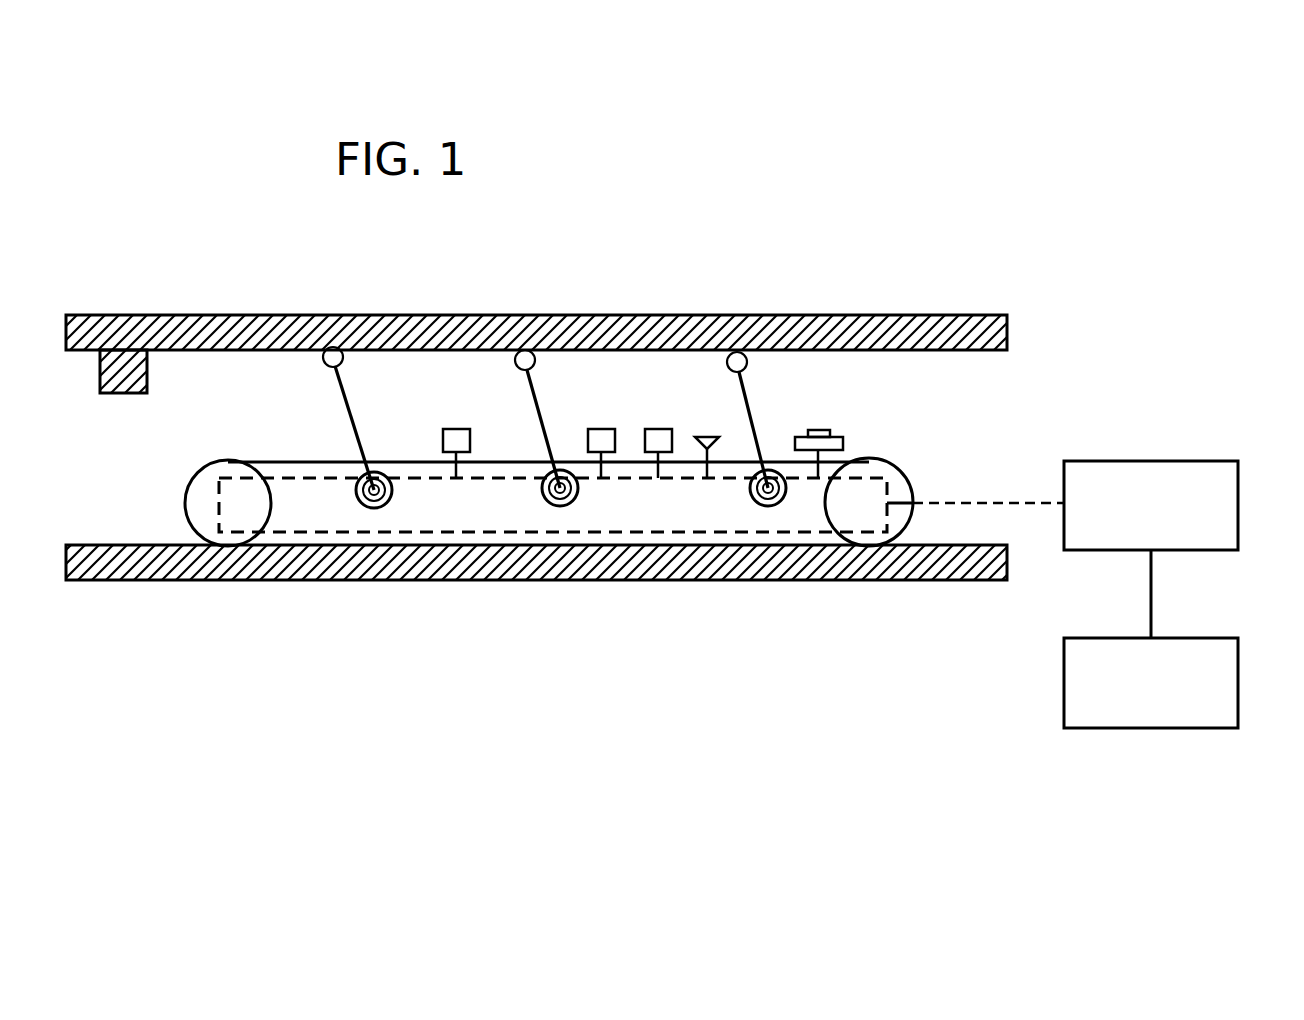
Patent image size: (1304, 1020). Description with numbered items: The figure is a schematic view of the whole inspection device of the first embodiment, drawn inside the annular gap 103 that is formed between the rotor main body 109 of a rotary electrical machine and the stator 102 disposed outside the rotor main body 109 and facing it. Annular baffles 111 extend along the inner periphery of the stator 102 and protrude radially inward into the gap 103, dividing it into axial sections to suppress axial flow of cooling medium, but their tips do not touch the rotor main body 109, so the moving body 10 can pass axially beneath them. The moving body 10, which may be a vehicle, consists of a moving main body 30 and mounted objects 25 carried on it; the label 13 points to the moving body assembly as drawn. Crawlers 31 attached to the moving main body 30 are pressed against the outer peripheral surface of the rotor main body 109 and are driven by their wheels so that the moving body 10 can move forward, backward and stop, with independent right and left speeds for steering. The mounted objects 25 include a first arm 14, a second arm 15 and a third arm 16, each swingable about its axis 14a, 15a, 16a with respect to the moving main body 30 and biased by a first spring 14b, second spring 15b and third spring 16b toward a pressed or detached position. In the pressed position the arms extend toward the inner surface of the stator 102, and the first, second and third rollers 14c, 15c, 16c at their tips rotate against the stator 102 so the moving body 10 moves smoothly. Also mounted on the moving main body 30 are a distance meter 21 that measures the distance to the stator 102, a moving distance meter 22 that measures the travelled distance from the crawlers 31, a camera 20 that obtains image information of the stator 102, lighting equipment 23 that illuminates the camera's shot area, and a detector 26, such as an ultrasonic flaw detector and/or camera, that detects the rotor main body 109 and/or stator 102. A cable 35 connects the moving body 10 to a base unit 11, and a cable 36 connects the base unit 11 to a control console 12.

The moving body 10 is at (956, 406).
The base unit 11 is at (1124, 461).
The control console 12 is at (1064, 688).
The robotic vehicle body 13 is at (908, 455).
The first arm 14 is at (360, 489).
The axis of the first arm 14a is at (371, 508).
The first spring 14b is at (377, 508).
The first roller 14c is at (322, 364).
The second arm 15 is at (544, 491).
The axis of the second arm 15a is at (557, 506).
The second spring 15b is at (563, 506).
The second roller 15c is at (515, 366).
The third arm 16 is at (773, 492).
The axis of the third arm 16a is at (765, 506).
The third spring 16b is at (771, 506).
The third roller 16c is at (746, 368).
The camera 20 is at (835, 432).
The distance meter 21 is at (450, 430).
The moving distance meter 22 is at (655, 430).
The lighting equipment 23 is at (706, 432).
The mounted objects 25 is at (858, 395).
The detector 26 is at (597, 430).
The moving main body 30 is at (310, 517).
The crawlers 31 is at (197, 502).
The cable 35 is at (913, 503).
The cable 36 is at (1153, 602).
The stator 102 is at (1007, 338).
The annular gap 103 is at (183, 443).
The rotor main body 109 is at (993, 573).
The annular baffles 111 is at (136, 380).